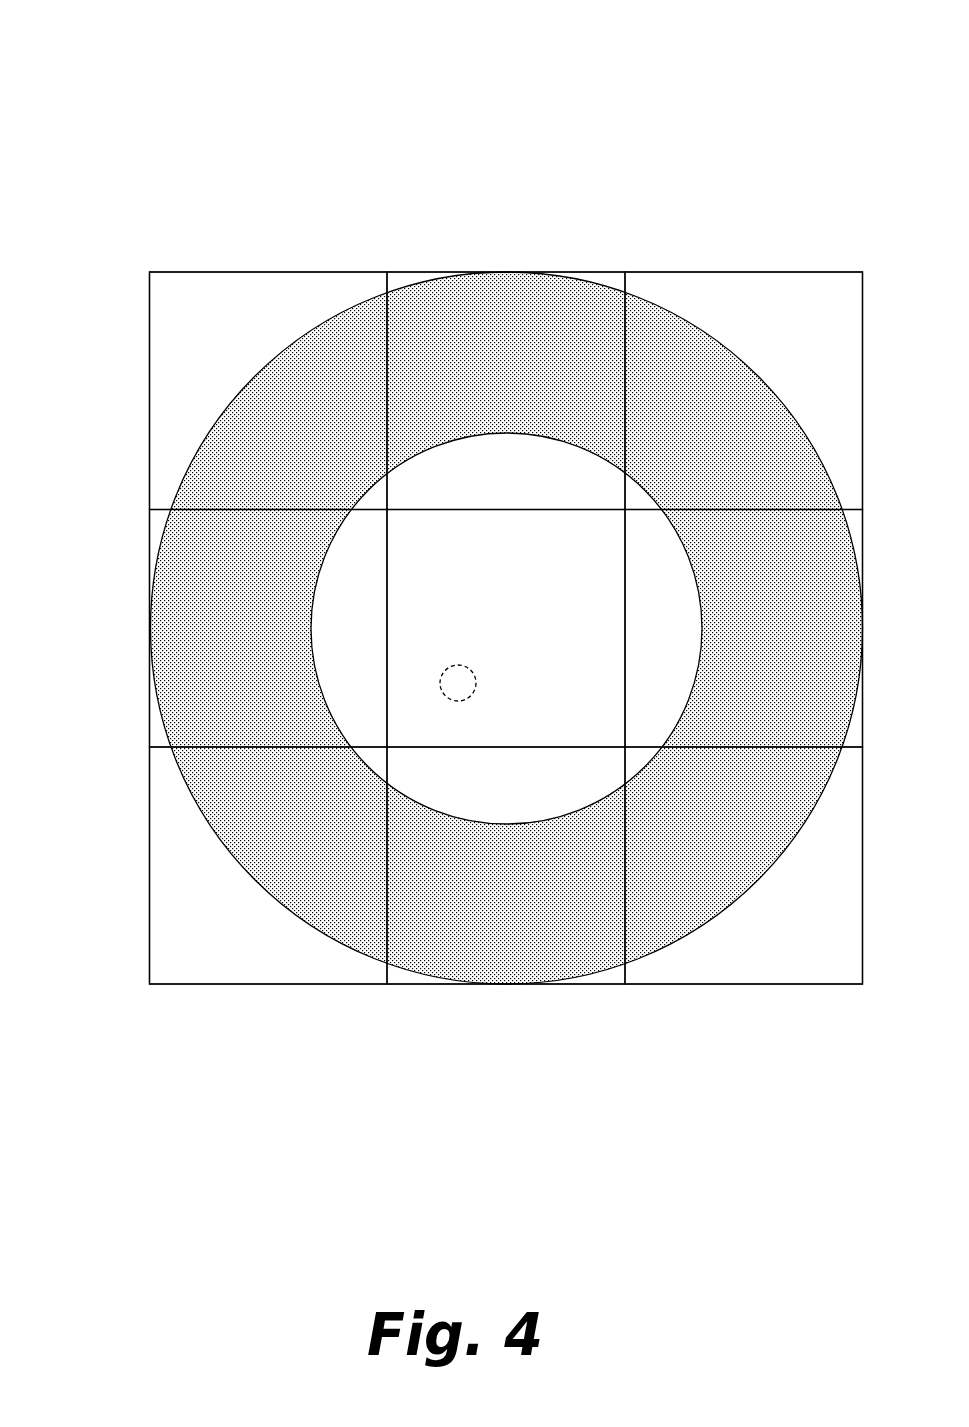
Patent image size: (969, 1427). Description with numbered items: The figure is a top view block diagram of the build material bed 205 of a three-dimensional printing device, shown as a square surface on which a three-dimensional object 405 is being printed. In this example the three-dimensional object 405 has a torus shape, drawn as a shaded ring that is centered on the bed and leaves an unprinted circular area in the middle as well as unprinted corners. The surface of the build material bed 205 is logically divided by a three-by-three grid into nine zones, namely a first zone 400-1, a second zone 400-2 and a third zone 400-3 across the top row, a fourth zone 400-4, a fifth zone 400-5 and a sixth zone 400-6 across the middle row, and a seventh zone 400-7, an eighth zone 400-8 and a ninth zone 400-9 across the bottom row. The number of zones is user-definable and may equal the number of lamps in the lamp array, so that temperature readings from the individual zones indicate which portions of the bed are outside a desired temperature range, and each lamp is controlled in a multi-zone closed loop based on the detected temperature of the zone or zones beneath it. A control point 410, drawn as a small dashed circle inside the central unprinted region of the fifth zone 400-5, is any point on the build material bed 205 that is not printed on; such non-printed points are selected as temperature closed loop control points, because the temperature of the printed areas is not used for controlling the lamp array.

The build material bed 205 is at (173, 271).
The 3D object 405 is at (401, 286).
The control point 410 is at (445, 701).
The zone 400-1 is at (236, 416).
The zone 400-2 is at (475, 416).
The zone 400-3 is at (712, 416).
The zone 400-4 is at (236, 654).
The zone 400-5 is at (475, 654).
The zone 400-6 is at (712, 654).
The zone 400-7 is at (236, 892).
The zone 400-8 is at (475, 892).
The zone 400-9 is at (712, 892).